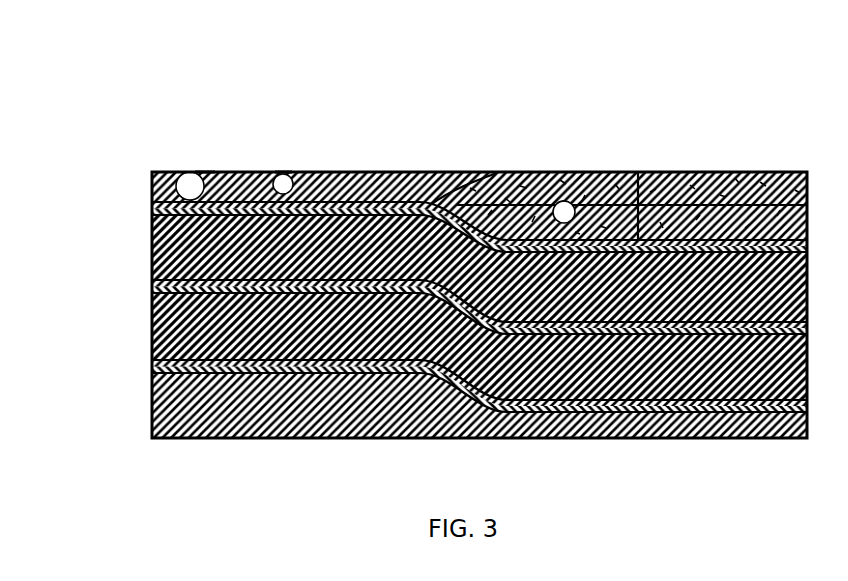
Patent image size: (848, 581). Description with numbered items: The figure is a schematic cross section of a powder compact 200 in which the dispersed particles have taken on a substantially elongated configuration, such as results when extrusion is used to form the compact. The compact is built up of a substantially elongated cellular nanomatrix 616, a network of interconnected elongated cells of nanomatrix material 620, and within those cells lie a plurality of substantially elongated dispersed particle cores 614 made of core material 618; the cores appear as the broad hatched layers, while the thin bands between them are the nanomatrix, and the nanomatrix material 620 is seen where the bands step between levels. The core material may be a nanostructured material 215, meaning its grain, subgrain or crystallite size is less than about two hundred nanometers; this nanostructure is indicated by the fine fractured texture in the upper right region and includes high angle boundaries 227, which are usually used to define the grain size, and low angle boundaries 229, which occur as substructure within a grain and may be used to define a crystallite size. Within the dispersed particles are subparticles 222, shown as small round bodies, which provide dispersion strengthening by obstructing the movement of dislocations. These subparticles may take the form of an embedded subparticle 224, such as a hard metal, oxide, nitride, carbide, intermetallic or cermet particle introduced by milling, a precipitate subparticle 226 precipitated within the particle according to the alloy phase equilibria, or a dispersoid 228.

The powder compact 200 is at (588, 126).
The nanostructured material 215 is at (610, 172).
The subparticle 222 is at (190, 170).
The embedded subparticle 224 is at (203, 175).
The precipitate subparticle 226 is at (556, 204).
The high angle boundary 227 is at (728, 207).
The dispersoid 228 is at (283, 173).
The low angle boundary 229 is at (675, 205).
The substantially elongated dispersed particle core 614 is at (158, 250).
The substantially elongated cellular nanomatrix 616 is at (380, 200).
The core material 618 is at (155, 326).
The nanomatrix material 620 is at (422, 178).